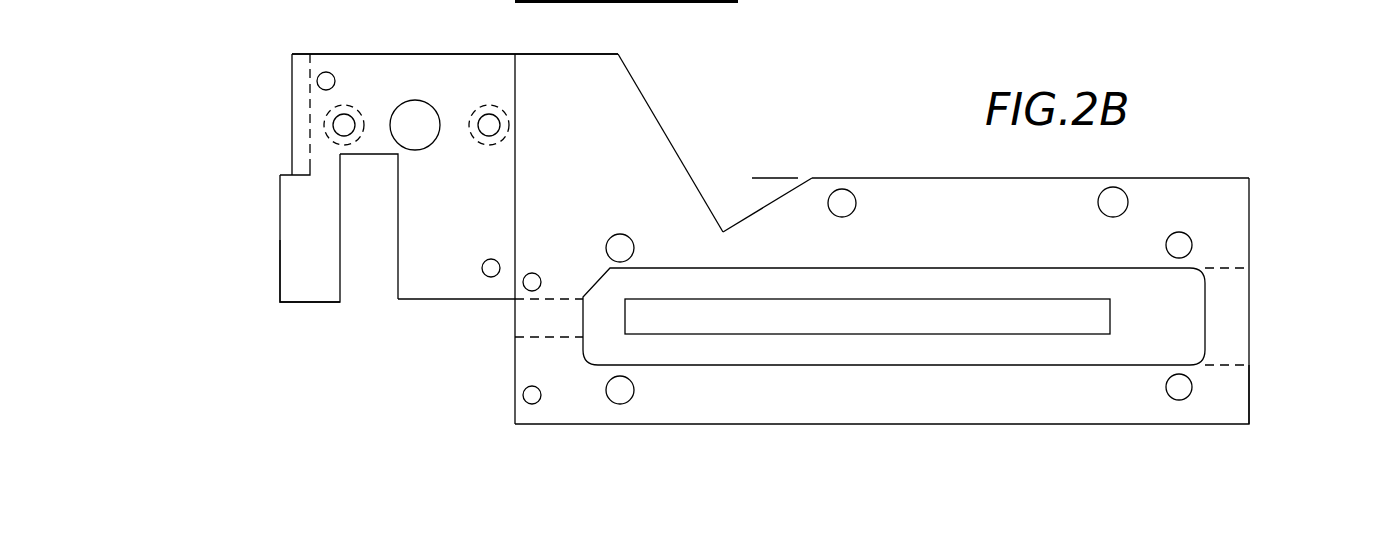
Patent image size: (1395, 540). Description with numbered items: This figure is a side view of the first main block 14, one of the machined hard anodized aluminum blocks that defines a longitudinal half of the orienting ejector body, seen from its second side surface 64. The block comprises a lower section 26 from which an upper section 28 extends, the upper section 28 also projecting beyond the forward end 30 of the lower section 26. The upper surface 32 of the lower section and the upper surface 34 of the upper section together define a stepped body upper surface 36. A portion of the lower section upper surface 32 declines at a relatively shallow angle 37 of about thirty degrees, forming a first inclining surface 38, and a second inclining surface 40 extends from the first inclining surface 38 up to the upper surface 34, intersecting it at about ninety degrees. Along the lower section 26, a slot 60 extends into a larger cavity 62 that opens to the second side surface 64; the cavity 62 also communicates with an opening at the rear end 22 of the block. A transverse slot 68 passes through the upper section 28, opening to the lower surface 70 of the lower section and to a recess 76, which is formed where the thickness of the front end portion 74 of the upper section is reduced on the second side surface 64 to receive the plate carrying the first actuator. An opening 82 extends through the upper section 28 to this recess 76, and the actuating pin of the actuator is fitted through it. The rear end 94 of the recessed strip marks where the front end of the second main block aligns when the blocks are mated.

The first main block 14 is at (1262, 218).
The rear end 22 is at (1250, 388).
The lower section 26 is at (935, 395).
The upper section 28 is at (457, 75).
The forward end 30 is at (515, 370).
The upper surface of lower section 32 is at (970, 178).
The upper surface of upper section 34 is at (593, 54).
The body upper surface 36 is at (878, 178).
The angle 37 is at (790, 210).
The first inclining surface 38 is at (770, 205).
The second inclining surface 40 is at (660, 118).
The slot 60 is at (1072, 310).
The cavity 62 is at (1163, 313).
The second side surface 64 is at (1023, 193).
The transverse slot 68 is at (370, 263).
The lower surface 70 is at (478, 300).
The front end portion of upper section 74 is at (303, 263).
The recess 76 is at (303, 206).
The opening 82 is at (405, 114).
The rear end of recessed strip 94 is at (592, 0).